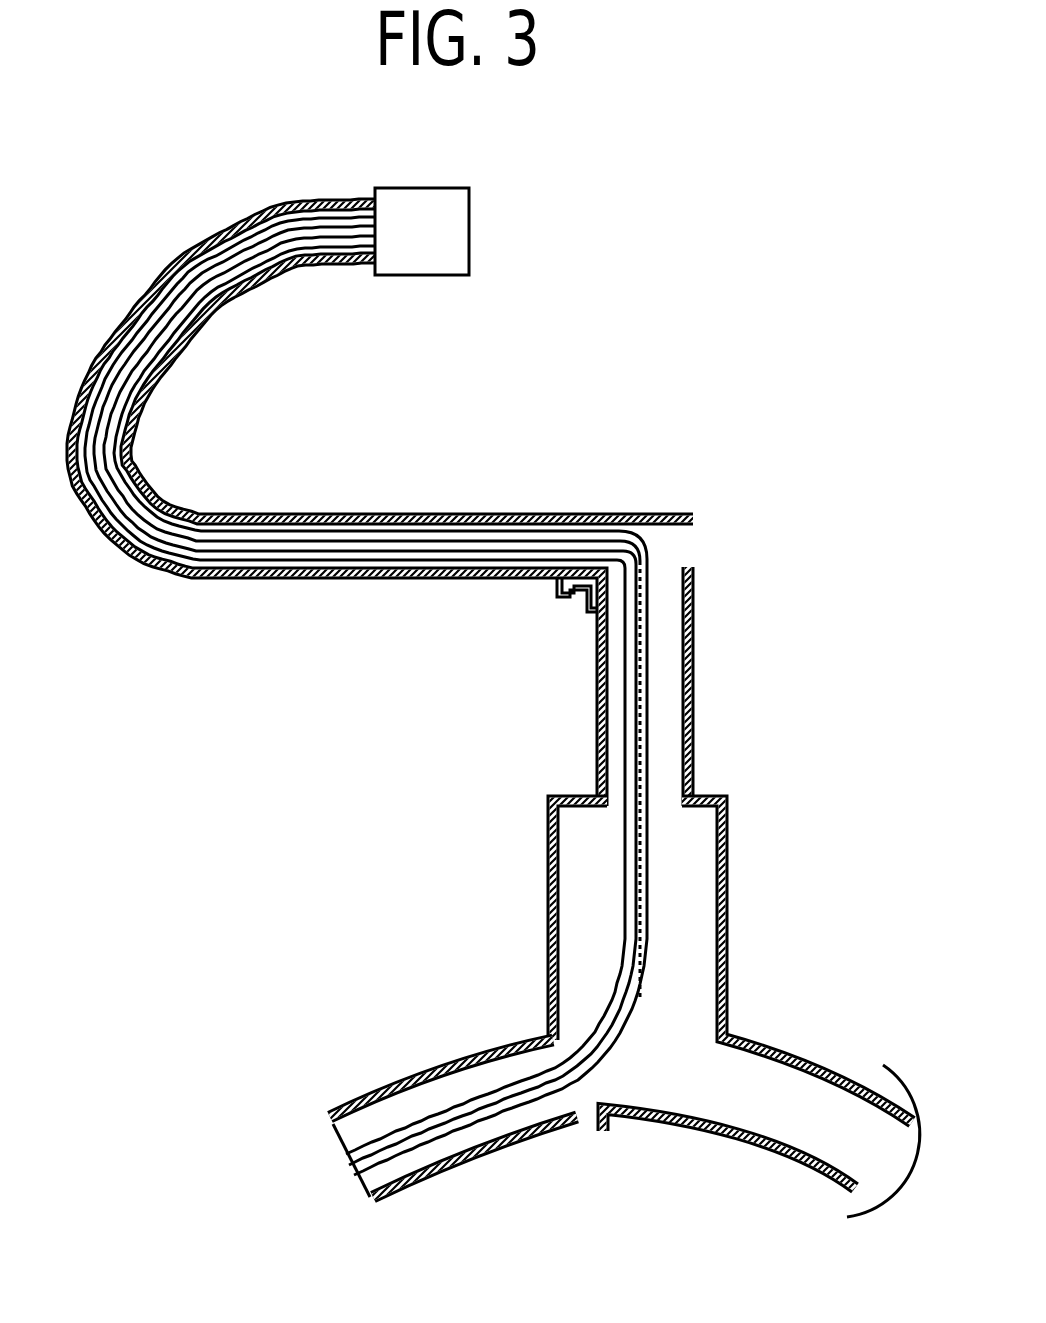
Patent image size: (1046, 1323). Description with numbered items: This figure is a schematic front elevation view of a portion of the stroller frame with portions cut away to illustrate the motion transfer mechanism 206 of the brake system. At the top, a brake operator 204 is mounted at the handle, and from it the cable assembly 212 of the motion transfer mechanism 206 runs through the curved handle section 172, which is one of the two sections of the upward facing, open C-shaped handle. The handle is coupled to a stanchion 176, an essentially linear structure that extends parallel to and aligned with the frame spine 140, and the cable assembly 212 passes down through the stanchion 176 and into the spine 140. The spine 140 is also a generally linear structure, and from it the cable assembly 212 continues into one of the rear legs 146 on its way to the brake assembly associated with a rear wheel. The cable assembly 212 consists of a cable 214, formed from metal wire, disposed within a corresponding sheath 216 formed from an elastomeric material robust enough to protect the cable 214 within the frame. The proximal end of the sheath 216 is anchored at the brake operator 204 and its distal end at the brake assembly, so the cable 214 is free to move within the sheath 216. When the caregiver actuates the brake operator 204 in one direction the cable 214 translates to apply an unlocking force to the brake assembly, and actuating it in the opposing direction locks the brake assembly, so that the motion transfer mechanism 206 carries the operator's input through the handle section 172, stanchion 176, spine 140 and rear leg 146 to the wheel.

The frame spine 140 is at (728, 888).
The rear leg 146 is at (358, 1107).
The handle section 172 is at (289, 513).
The stanchion 176 is at (598, 788).
The brake operator 204 is at (415, 188).
The motion transfer mechanism 206 is at (610, 917).
The cable assembly 212 is at (662, 669).
The cable 214 is at (635, 711).
The sheath 216 is at (627, 668).